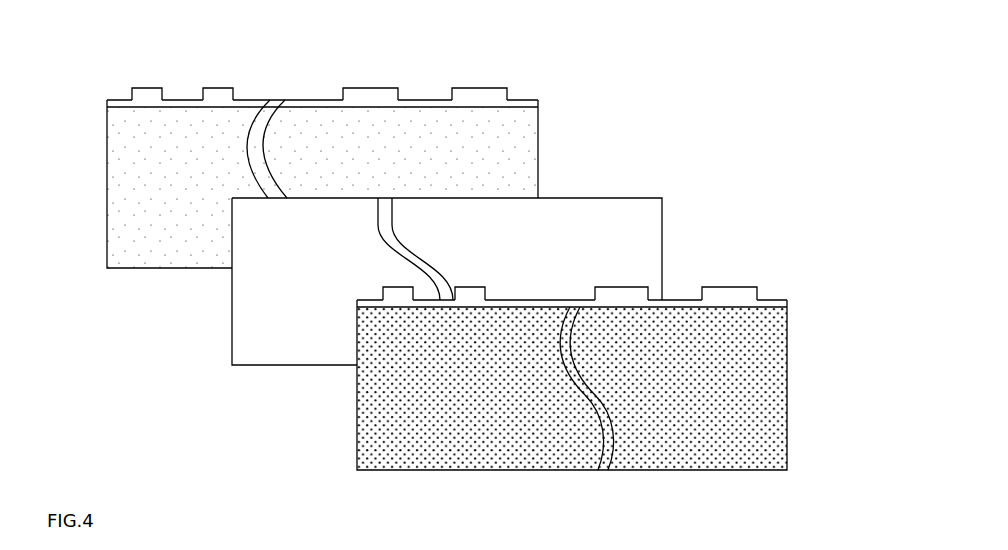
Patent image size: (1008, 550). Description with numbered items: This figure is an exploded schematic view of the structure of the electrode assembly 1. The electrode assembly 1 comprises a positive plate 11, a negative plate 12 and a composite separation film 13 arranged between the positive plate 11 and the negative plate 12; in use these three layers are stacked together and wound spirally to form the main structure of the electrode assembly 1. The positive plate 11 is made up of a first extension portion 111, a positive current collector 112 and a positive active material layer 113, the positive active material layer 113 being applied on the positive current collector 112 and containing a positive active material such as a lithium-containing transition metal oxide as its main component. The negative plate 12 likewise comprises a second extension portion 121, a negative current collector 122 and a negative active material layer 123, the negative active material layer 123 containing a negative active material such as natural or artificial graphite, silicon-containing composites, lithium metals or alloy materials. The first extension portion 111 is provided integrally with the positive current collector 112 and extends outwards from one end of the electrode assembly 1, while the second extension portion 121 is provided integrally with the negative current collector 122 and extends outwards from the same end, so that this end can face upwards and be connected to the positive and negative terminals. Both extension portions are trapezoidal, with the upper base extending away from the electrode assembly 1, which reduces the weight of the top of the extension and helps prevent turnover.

The electrode assembly 1 is at (463, 245).
The positive plate 11 is at (340, 144).
The first extension portion 111 is at (475, 100).
The positive current collector 112 is at (112, 101).
The positive active material layer 113 is at (130, 167).
The negative plate 12 is at (614, 344).
The second extension portion 121 is at (730, 297).
The negative current collector 122 is at (778, 301).
The negative active material layer 123 is at (748, 443).
The composite separation film 13 is at (590, 213).